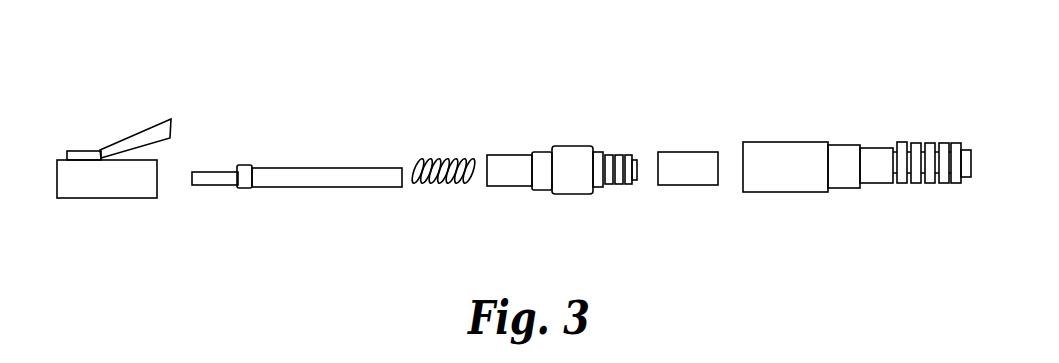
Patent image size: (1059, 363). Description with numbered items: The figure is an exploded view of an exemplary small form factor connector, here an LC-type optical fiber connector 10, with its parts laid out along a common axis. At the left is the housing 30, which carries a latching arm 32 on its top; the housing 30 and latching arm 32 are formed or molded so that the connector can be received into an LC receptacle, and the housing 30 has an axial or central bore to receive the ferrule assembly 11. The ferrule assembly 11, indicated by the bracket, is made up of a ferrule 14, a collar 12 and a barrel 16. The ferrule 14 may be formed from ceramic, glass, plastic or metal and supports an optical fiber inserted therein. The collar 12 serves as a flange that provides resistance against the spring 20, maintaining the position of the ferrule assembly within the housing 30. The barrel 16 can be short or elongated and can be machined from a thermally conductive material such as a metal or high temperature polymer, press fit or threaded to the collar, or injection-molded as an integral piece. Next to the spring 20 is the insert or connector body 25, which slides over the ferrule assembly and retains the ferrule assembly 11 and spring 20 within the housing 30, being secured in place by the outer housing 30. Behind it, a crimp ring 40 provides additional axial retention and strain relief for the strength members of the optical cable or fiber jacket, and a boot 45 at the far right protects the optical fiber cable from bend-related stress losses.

The optical fiber connector 10 is at (568, 76).
The ferrule assembly 11 is at (192, 102).
The collar 12 is at (242, 165).
The ferrule 14 is at (218, 177).
The barrel 16 is at (320, 177).
The spring 20 is at (437, 187).
The connector body 25 is at (577, 175).
The housing 30 is at (121, 190).
The latching arm 32 is at (147, 128).
The crimp ring 40 is at (692, 175).
The boot 45 is at (795, 173).